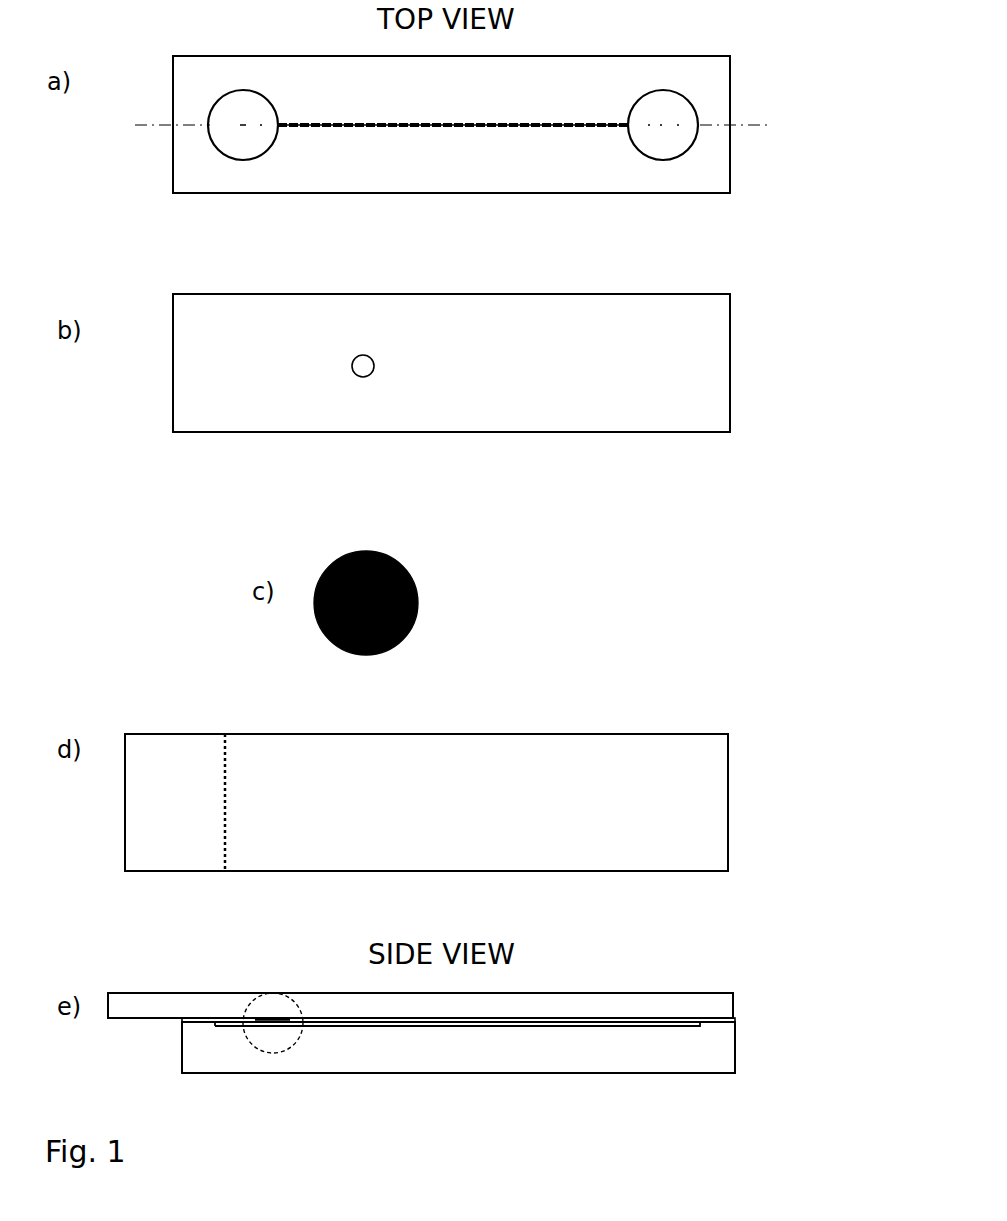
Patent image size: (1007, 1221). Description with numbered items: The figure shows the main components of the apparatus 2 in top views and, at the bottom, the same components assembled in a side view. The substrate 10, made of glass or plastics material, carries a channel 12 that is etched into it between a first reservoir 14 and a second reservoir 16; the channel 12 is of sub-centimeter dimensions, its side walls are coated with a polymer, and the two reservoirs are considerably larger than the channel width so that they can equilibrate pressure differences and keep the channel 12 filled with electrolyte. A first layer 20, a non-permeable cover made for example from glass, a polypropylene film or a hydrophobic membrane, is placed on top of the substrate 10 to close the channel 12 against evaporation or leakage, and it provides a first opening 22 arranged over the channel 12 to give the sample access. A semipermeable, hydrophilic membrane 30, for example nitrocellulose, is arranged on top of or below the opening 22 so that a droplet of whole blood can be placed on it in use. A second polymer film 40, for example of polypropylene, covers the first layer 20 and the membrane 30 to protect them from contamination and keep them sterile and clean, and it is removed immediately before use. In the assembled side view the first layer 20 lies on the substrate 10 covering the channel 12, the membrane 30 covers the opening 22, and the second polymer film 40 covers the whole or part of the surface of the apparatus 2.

The apparatus 2 is at (236, 975).
The substrate 10 is at (765, 1050).
The channel 12 is at (416, 124).
The first reservoir 14 is at (252, 136).
The second reservoir 16 is at (655, 137).
The first layer 20 is at (765, 1020).
The first opening 22 is at (367, 361).
The membrane 30 is at (412, 583).
The second polymer film 40 is at (755, 988).